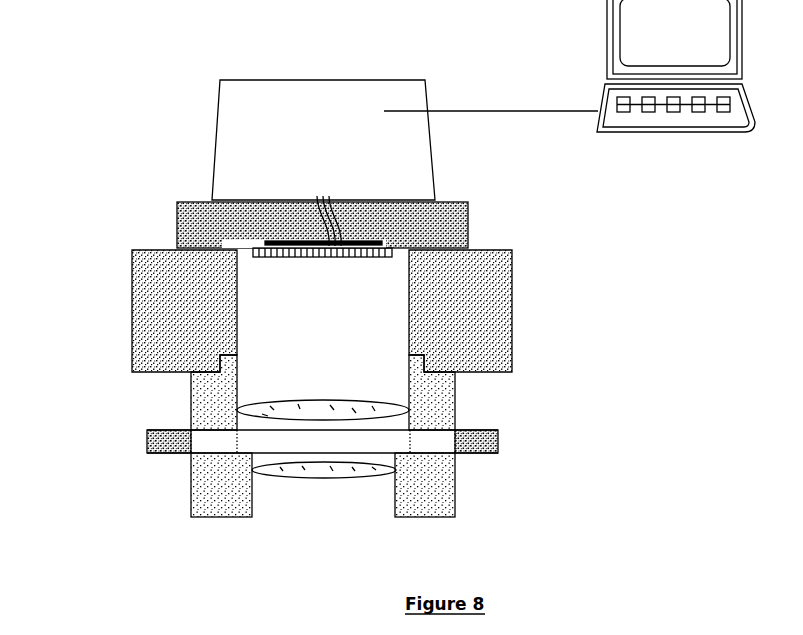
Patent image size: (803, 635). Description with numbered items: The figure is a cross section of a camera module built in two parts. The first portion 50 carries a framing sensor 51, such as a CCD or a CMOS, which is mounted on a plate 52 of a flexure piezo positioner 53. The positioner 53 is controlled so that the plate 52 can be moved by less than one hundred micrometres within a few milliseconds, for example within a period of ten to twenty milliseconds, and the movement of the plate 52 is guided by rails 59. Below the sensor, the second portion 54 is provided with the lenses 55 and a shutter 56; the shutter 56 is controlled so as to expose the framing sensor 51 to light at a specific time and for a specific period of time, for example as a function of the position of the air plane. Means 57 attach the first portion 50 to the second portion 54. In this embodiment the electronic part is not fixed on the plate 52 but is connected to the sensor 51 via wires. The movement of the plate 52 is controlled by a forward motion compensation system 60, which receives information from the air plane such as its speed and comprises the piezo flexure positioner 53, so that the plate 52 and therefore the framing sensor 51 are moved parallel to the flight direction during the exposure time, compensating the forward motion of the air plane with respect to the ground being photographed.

The first portion 50 is at (102, 82).
The framing sensor 51 is at (360, 262).
The plate 52 is at (284, 242).
The flexure piezo positioner 53 is at (453, 202).
The second portion 54 is at (102, 372).
The lenses 55 is at (302, 401).
The shutter 56 is at (498, 432).
The means for attaching 57 is at (427, 358).
The rails 59 is at (395, 244).
The forward motion compensation system 60 is at (676, 66).